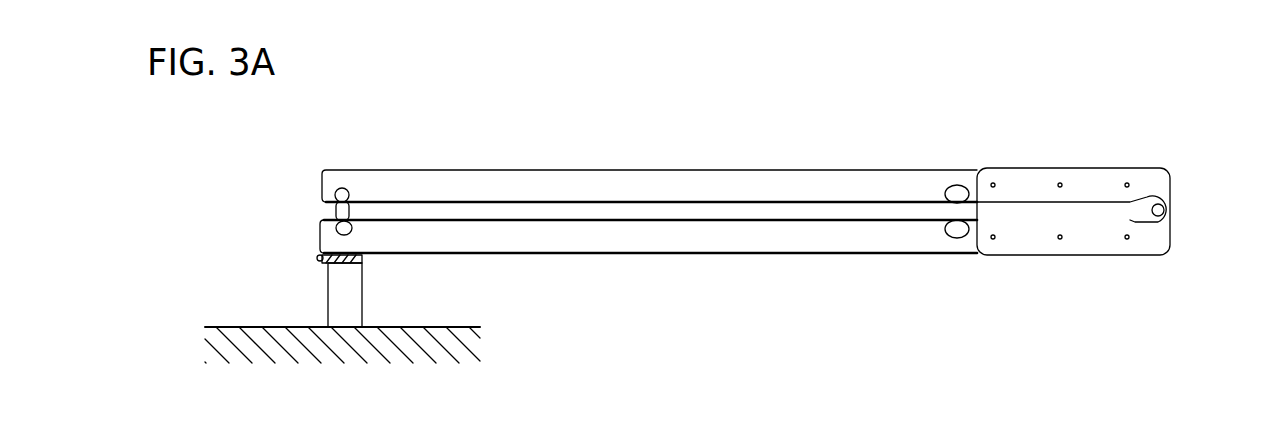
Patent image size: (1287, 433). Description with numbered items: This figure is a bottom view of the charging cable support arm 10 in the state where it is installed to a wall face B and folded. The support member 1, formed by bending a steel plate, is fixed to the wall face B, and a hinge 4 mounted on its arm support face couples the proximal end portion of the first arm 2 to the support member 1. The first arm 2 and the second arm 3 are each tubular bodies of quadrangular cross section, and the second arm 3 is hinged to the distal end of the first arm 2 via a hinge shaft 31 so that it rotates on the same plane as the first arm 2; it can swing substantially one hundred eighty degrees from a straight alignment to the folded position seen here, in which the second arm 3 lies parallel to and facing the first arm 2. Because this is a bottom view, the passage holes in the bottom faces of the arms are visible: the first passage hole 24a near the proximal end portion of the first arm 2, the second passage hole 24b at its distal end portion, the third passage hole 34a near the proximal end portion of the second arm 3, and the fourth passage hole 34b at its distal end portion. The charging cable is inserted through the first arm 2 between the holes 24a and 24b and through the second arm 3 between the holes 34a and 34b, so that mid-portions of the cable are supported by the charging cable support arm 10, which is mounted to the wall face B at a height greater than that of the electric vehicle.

The charging cable support arm 10 is at (1138, 100).
The support member 1 is at (327, 292).
The first arm 2 is at (680, 255).
The second arm 3 is at (702, 168).
The hinge 4 is at (320, 258).
The first passage hole 24a is at (330, 230).
The second passage hole 24b is at (957, 240).
The third passage hole 34a is at (955, 185).
The fourth passage hole 34b is at (342, 188).
The hinge shaft 31 is at (1172, 213).
The wall face B is at (433, 327).